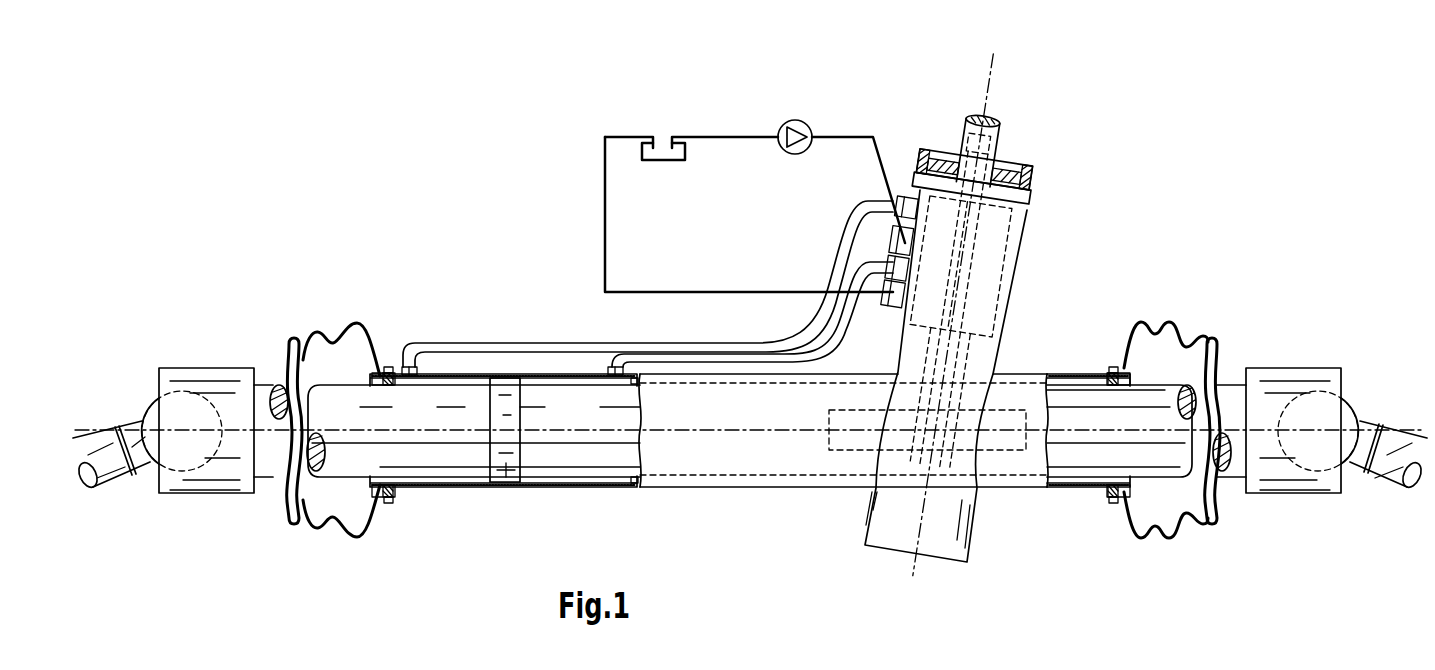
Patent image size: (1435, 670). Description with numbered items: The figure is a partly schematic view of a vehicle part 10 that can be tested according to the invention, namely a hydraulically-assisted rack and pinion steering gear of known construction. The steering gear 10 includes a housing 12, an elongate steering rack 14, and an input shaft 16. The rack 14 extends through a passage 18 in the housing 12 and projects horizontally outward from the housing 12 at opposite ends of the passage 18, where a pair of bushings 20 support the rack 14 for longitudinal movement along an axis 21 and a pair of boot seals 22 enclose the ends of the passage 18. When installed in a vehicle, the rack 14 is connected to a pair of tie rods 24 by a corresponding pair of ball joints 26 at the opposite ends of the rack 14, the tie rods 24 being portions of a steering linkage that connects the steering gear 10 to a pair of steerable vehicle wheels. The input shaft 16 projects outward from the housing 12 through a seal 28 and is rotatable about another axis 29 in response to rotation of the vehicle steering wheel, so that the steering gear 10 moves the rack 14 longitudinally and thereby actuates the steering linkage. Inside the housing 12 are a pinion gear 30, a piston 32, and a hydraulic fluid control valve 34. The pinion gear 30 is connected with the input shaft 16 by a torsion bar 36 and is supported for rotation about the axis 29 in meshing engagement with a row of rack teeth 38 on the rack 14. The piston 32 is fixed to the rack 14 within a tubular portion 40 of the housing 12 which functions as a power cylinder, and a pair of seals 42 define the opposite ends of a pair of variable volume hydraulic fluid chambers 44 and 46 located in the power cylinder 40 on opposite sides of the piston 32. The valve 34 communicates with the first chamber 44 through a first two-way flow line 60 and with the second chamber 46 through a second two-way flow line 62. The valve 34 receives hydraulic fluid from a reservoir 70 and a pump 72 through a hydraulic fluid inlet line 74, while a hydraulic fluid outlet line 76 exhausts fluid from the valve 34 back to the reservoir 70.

The vehicle part 10 is at (458, 203).
The housing 12 is at (752, 498).
The steering rack 14 is at (342, 366).
The input shaft 16 is at (966, 130).
The passage 18 is at (378, 453).
The bushings 20 is at (373, 482).
The axis 21 is at (693, 430).
The boot seals 22 is at (310, 335).
The tie rods 24 is at (103, 435).
The ball joints 26 is at (222, 385).
The seal 28 is at (1008, 163).
The axis 29 is at (990, 83).
The pinion gear 30 is at (940, 460).
The piston 32 is at (507, 462).
The hydraulic fluid control valve 34 is at (1006, 257).
The torsion bar 36 is at (967, 287).
The rack teeth 38 is at (860, 444).
The tubular portion 40 is at (560, 487).
The seals 42 is at (393, 485).
The first hydraulic fluid chamber 44 is at (427, 420).
The second hydraulic fluid chamber 46 is at (589, 420).
The first two-way flow line 60 is at (573, 348).
The second two-way flow line 62 is at (805, 350).
The reservoir 70 is at (663, 162).
The pump 72 is at (786, 120).
The hydraulic fluid inlet line 74 is at (845, 137).
The hydraulic fluid outlet line 76 is at (700, 292).